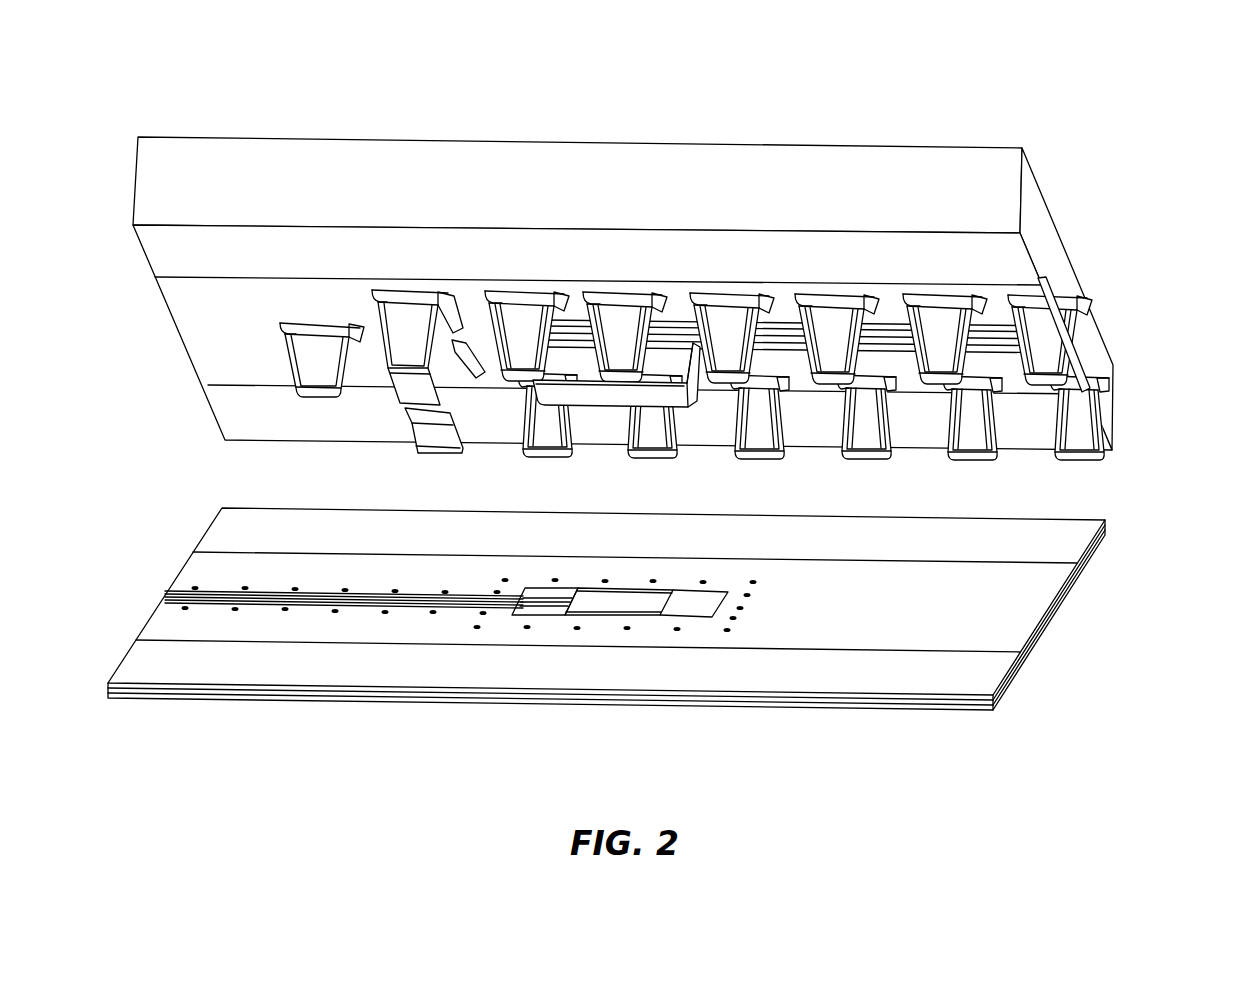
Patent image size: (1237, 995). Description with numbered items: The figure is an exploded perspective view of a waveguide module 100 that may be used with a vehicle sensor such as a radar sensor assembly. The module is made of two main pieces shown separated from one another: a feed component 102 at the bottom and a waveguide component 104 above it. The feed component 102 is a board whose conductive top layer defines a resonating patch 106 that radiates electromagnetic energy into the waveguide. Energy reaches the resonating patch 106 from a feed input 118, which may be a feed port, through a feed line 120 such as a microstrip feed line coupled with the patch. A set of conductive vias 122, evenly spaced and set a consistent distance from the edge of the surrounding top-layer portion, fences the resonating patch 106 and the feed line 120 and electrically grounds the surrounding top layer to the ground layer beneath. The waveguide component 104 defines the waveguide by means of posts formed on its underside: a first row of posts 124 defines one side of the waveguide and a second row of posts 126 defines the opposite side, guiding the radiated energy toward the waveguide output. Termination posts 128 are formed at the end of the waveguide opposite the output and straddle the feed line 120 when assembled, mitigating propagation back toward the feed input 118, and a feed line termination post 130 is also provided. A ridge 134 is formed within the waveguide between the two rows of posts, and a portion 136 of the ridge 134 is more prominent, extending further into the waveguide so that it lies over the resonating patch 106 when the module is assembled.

The waveguide module 100 is at (1077, 104).
The feed component 102 is at (232, 706).
The waveguide component 104 is at (1067, 248).
The resonating patch 106 is at (627, 600).
The feed input 118 is at (161, 593).
The feed line 120 is at (222, 592).
The conductive vias 122 is at (433, 612).
The first row of posts 124 is at (958, 420).
The second row of posts 126 is at (625, 325).
The termination posts 128 is at (415, 305).
The feed line termination posts 130 is at (317, 352).
The ridge 134 is at (1066, 350).
The prominent portion of the ridge 136 is at (675, 360).